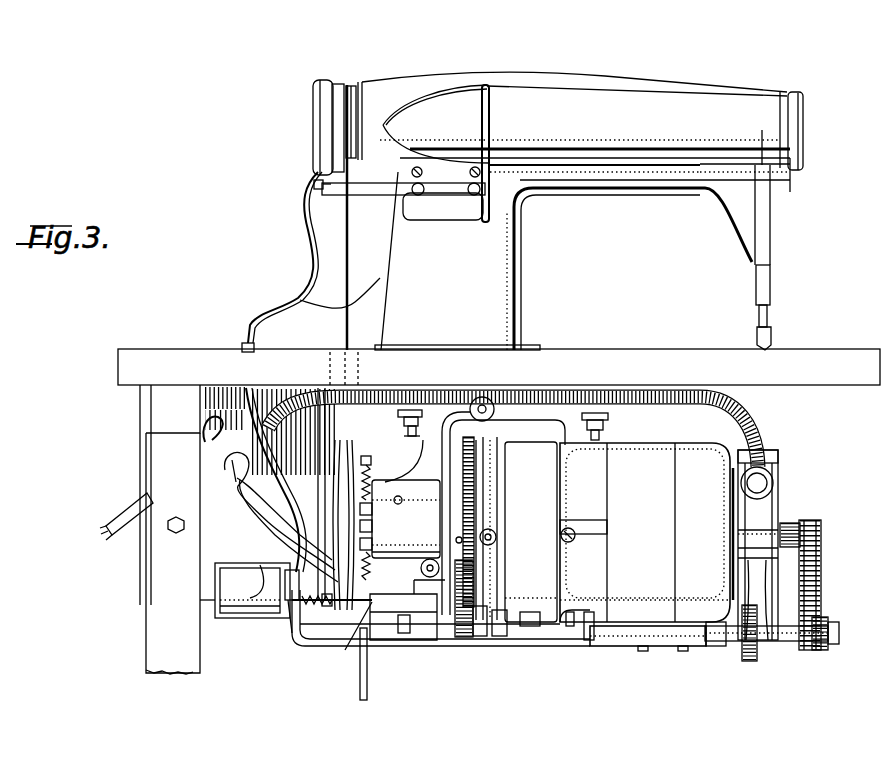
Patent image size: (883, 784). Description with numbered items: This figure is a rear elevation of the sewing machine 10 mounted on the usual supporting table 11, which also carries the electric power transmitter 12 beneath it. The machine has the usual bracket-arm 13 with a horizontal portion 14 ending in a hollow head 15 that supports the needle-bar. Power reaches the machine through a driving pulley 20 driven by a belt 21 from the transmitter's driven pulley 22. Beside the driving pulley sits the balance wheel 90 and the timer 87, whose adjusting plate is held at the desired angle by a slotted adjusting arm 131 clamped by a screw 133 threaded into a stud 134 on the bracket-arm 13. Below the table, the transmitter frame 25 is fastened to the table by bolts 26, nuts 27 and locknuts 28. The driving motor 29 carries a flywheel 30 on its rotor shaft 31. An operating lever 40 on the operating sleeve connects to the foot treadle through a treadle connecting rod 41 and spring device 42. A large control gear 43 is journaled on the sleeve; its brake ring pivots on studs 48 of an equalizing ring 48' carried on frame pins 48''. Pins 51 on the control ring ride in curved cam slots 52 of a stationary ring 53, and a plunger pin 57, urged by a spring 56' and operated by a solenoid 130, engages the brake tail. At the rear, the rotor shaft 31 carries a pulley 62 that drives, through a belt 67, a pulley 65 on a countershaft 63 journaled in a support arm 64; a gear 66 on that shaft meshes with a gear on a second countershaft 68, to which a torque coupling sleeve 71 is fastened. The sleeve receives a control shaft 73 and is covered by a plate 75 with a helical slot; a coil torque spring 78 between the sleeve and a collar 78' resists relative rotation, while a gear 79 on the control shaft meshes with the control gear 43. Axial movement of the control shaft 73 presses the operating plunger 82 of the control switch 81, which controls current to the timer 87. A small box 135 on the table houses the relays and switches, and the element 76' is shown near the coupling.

The sewing machine 10 is at (626, 77).
The supporting table 11 is at (166, 352).
The electric power transmitter 12 is at (793, 490).
The bracket-arm 13 is at (508, 276).
The horizontal portion 14 is at (604, 188).
The hollow head 15 is at (784, 250).
The driving pulley 20 is at (348, 86).
The belt 21 is at (345, 337).
The pulley 22 is at (337, 494).
The frame 25 is at (442, 468).
The bolts 26 is at (418, 438).
The nuts 27 is at (398, 413).
The locknuts 28 is at (404, 424).
The driving motor 29 is at (668, 552).
The flywheel 30 is at (546, 588).
The motor rotor shaft 31 is at (823, 540).
The operating lever 40 is at (376, 504).
The treadle connecting rod 41 is at (360, 690).
The spring device 42 is at (366, 470).
The control gear 43 is at (458, 637).
The pivot studs 48 is at (506, 528).
The equalizing ring 48' is at (509, 530).
The pins 48'' is at (513, 417).
The pins 51 is at (457, 540).
The curved cam slots 52 is at (462, 528).
The stationary ring 53 is at (447, 572).
The spring 56' is at (305, 624).
The plunger pin 57 is at (345, 603).
The pulley 62 is at (796, 530).
The countershaft 63 is at (840, 640).
The support arm 64 is at (783, 642).
The pulley 65 is at (828, 622).
The gear 66 is at (748, 661).
The belt 67 is at (822, 588).
The second countershaft 68 is at (730, 642).
The torque coupling sleeve 71 is at (628, 647).
The control shaft 73 is at (500, 636).
The plate 75 is at (666, 652).
The bracket 76' is at (534, 651).
The coil torque spring 78 is at (593, 647).
The collar 78' is at (565, 650).
The gear 79 is at (478, 636).
The control switch 81 is at (380, 641).
The operating plunger 82 is at (403, 634).
The timer 87 is at (298, 109).
The balance wheel 90 is at (330, 80).
The solenoid 130 is at (258, 620).
The adjusting arm 131 is at (325, 212).
The clamping screw 133 is at (314, 186).
The stud 134 is at (364, 190).
The box 135 is at (216, 456).